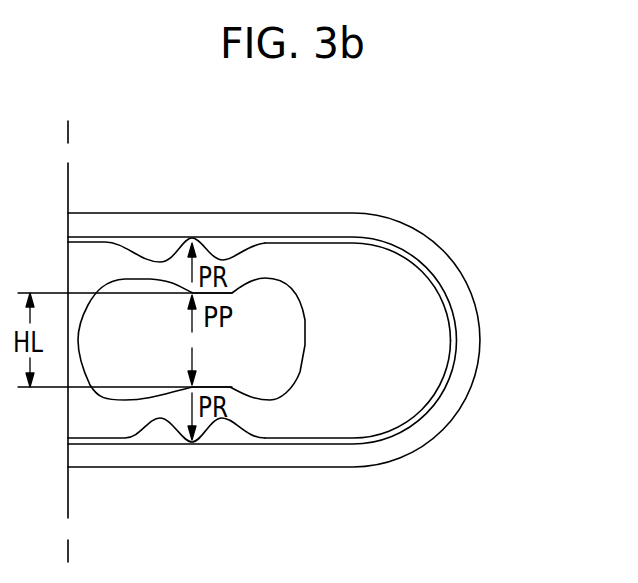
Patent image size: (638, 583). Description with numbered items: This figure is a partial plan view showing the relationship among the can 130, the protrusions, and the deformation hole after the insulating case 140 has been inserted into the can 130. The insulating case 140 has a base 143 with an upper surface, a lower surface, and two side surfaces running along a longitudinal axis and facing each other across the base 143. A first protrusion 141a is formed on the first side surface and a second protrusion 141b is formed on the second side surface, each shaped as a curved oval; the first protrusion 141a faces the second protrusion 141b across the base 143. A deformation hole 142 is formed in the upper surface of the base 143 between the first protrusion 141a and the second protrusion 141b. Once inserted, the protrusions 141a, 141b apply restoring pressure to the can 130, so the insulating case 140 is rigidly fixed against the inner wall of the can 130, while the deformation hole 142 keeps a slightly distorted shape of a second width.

The can 130 is at (467, 323).
The insulating case 140 is at (377, 270).
The first protrusion 141a is at (202, 240).
The second protrusion 141b is at (197, 441).
The deformation hole 142 is at (267, 358).
The base 143 is at (423, 377).